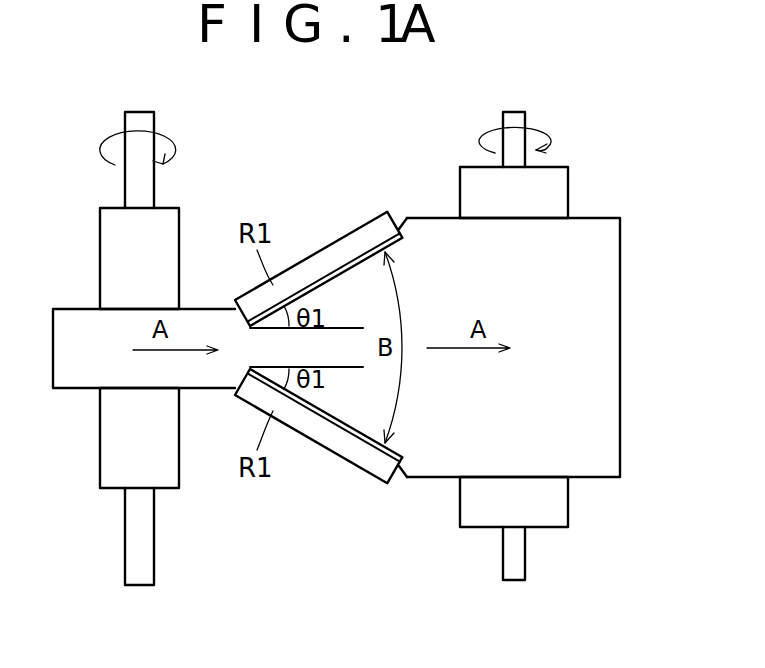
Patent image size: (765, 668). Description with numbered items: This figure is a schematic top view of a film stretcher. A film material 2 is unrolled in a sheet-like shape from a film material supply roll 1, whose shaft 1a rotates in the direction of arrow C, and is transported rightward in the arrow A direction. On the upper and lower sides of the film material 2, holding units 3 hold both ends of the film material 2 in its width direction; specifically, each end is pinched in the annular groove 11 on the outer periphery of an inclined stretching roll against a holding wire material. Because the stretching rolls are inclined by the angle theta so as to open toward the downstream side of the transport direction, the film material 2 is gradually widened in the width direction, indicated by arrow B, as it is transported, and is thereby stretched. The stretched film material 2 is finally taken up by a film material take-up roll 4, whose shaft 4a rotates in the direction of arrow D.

The film material supply roll 1 is at (63, 309).
The shaft of the supply roll 1a is at (124, 541).
The film material 2 is at (200, 309).
The holding unit 3 is at (292, 230).
The annular groove 11 is at (362, 246).
The film material take-up roll 4 is at (597, 231).
The shaft of the take-up roll 4a is at (527, 557).